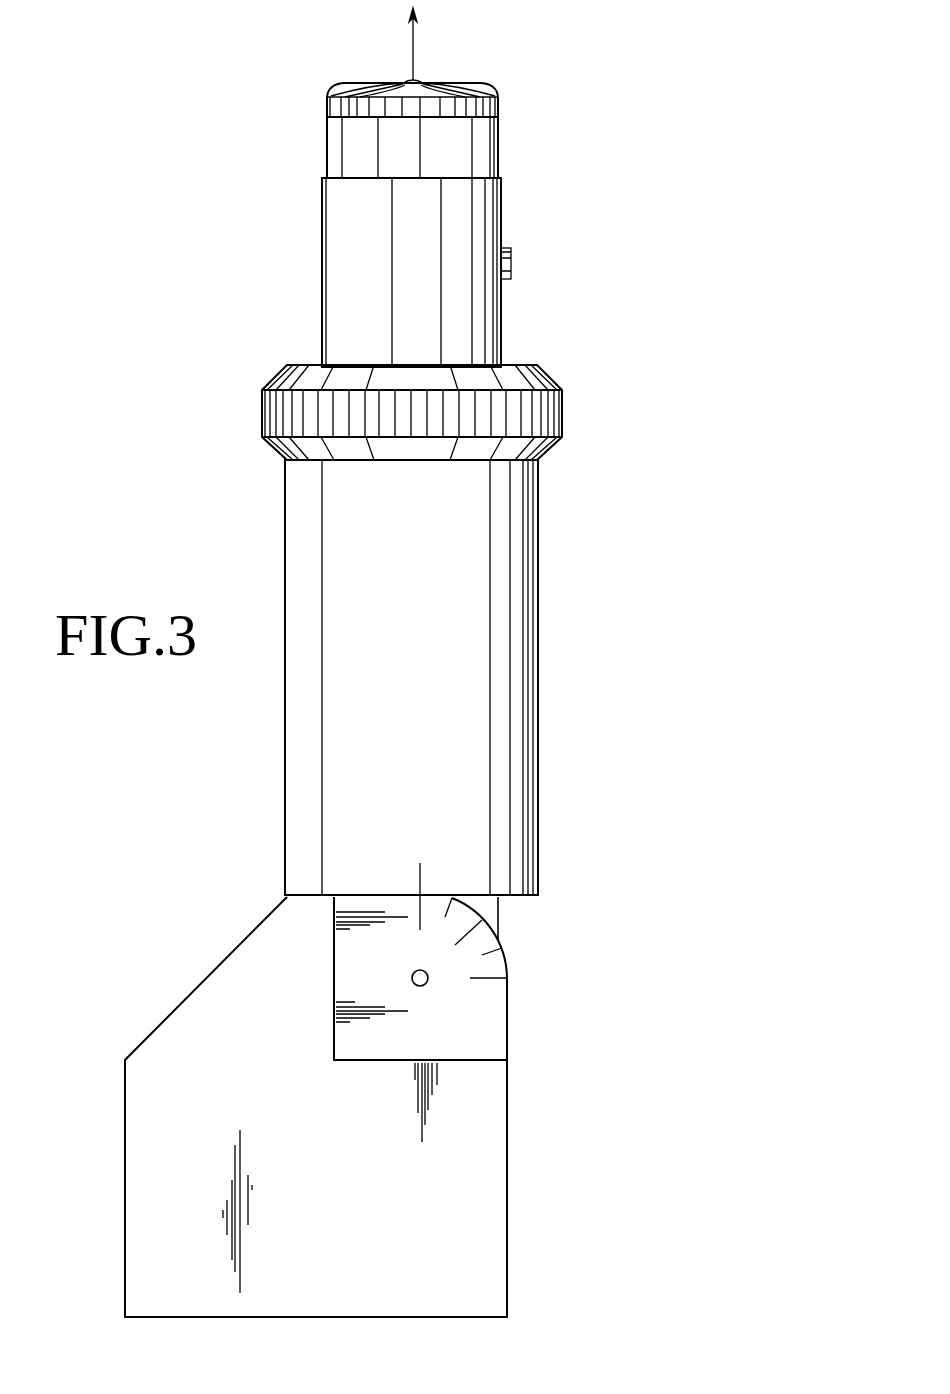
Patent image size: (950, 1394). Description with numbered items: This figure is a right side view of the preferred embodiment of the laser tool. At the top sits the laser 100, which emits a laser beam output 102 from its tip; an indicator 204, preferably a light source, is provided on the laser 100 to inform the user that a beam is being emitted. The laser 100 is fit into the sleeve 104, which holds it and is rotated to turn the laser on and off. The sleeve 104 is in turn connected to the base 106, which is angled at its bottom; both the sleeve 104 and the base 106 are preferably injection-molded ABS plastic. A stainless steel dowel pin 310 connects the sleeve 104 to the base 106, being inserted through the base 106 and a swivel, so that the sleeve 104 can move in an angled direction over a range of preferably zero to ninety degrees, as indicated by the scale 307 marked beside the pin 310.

The laser 100 is at (322, 260).
The laser beam output 102 is at (408, 79).
The sleeve 104 is at (540, 642).
The base 106 is at (198, 987).
The indicator 204 is at (510, 262).
The scale 307 is at (478, 912).
The dowel pin 310 is at (428, 988).